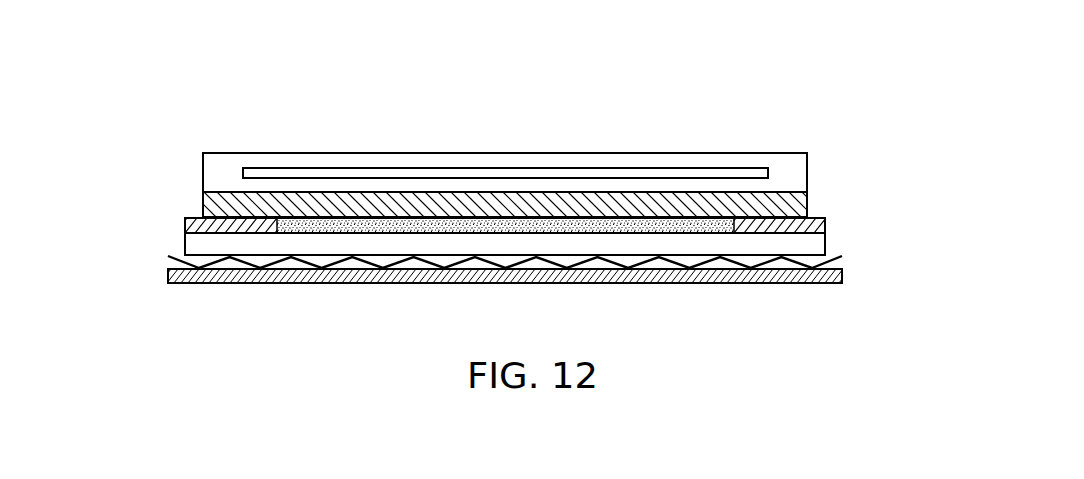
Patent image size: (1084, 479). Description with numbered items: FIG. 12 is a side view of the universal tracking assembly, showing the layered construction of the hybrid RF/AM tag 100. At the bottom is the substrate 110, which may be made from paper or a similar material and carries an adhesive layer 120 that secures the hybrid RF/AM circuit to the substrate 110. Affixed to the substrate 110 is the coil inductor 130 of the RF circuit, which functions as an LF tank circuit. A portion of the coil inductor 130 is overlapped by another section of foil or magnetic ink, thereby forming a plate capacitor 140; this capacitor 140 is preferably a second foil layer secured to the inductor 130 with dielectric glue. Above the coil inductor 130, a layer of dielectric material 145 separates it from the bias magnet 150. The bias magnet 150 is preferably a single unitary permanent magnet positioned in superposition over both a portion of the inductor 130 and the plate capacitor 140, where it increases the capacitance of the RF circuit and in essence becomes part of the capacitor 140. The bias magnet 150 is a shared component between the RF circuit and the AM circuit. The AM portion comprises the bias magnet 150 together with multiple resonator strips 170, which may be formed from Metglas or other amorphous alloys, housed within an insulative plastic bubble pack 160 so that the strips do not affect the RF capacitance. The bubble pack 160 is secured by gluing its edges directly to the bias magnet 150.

The tag 100 is at (752, 113).
The substrate 110 is at (843, 277).
The adhesive layer 120 is at (153, 258).
The coil inductor 130 is at (818, 246).
The plate capacitor 140 is at (185, 226).
The layer of dielectric material 145 is at (587, 233).
The bias magnet 150 is at (203, 200).
The bubble pack 160 is at (797, 173).
The resonator strips 170 is at (257, 168).